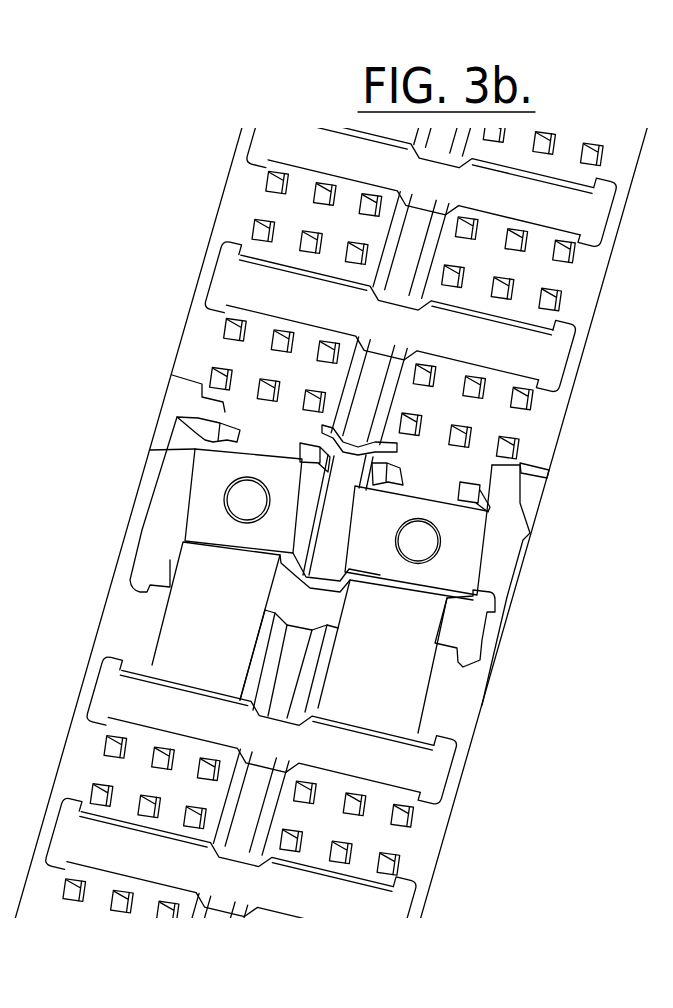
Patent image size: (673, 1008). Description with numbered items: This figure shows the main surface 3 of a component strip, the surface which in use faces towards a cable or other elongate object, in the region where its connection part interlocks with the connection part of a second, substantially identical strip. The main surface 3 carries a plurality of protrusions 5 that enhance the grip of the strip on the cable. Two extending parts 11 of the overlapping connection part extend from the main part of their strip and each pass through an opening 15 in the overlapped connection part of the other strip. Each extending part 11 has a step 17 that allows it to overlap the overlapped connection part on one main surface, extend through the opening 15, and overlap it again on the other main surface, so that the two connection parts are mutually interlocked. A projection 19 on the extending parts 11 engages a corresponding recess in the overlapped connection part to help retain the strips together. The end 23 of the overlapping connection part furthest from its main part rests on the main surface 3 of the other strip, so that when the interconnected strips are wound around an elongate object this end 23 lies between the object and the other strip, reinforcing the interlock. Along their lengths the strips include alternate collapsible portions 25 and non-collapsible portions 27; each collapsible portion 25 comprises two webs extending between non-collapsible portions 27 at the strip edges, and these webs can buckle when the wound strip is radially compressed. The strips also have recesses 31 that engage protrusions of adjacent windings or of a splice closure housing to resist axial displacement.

The main surface 3 is at (492, 585).
The protrusions 5 is at (347, 848).
The extending parts 11 is at (172, 632).
The opening 15 is at (472, 641).
The step 17 is at (245, 501).
The projection 19 is at (197, 434).
The end of the overlapping connection part 23 is at (190, 669).
The collapsible portions 25 is at (207, 273).
The non-collapsible portions 27 is at (243, 207).
The recesses 31 is at (378, 368).